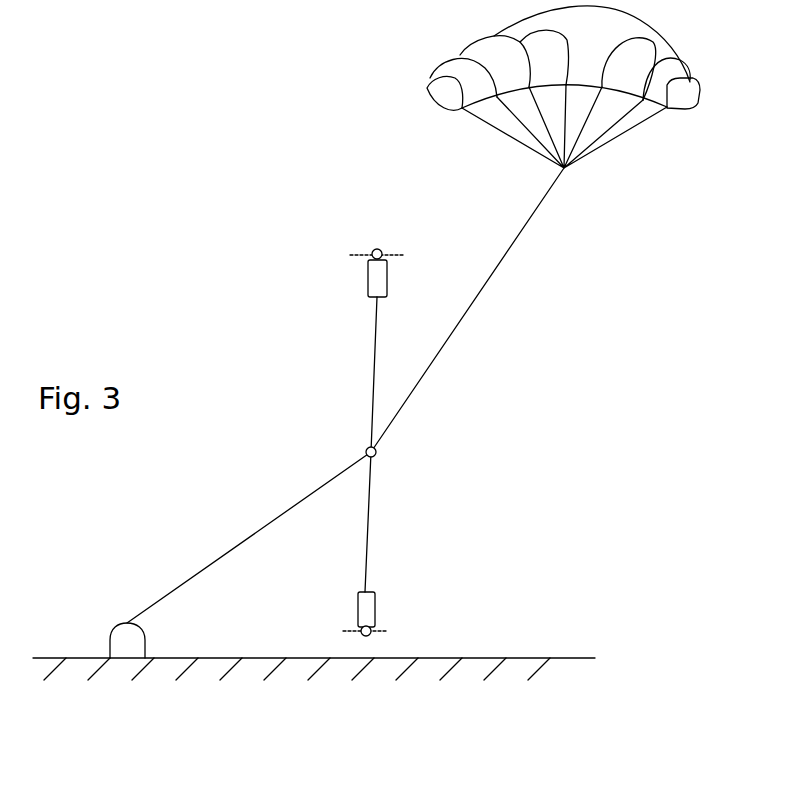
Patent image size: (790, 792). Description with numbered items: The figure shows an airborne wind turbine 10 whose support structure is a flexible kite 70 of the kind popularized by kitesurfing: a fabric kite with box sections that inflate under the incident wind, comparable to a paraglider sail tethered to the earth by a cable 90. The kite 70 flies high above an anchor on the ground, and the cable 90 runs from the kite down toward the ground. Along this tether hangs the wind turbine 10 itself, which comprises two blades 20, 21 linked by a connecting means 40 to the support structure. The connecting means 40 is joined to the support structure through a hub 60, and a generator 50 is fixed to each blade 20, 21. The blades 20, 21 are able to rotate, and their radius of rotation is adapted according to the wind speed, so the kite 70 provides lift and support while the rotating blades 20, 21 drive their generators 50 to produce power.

The wind turbine 10 is at (380, 441).
The blade 20 is at (368, 280).
The blade 21 is at (376, 600).
The connecting means 40 is at (375, 360).
The generator 50 is at (373, 252).
The hub 60 is at (376, 452).
The kite 70 is at (463, 47).
The cable 90 is at (457, 327).